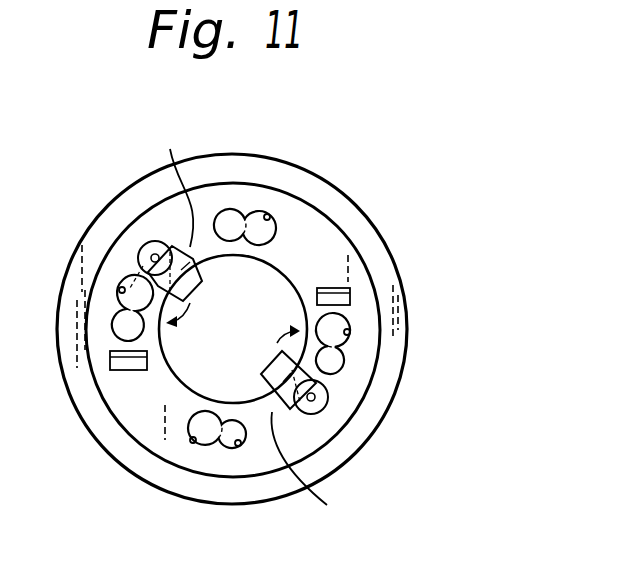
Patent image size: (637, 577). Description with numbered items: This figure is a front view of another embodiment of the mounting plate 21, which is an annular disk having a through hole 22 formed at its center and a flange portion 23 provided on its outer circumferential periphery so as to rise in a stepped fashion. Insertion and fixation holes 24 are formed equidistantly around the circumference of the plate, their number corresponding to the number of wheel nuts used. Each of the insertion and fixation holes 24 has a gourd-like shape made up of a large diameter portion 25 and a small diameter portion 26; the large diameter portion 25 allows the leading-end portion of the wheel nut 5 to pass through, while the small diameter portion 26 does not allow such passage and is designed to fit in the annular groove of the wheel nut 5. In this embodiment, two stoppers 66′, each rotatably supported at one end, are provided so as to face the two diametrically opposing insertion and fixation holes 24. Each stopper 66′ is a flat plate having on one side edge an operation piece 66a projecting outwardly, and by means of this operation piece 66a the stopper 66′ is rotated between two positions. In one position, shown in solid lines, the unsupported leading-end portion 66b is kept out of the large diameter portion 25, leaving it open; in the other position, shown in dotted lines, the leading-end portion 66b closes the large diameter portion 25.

The mounting plate 21 is at (377, 207).
The through hole 22 is at (176, 366).
The flange portion 23 is at (402, 320).
The insertion and fixation holes 24 is at (305, 116).
The large diameter portion 25 is at (270, 213).
The small diameter portion 26 is at (237, 210).
The wheel nut 5 is at (213, 452).
The stopper 66′ is at (170, 228).
The operation piece 66a is at (262, 325).
The leading-end portion 66b is at (190, 282).